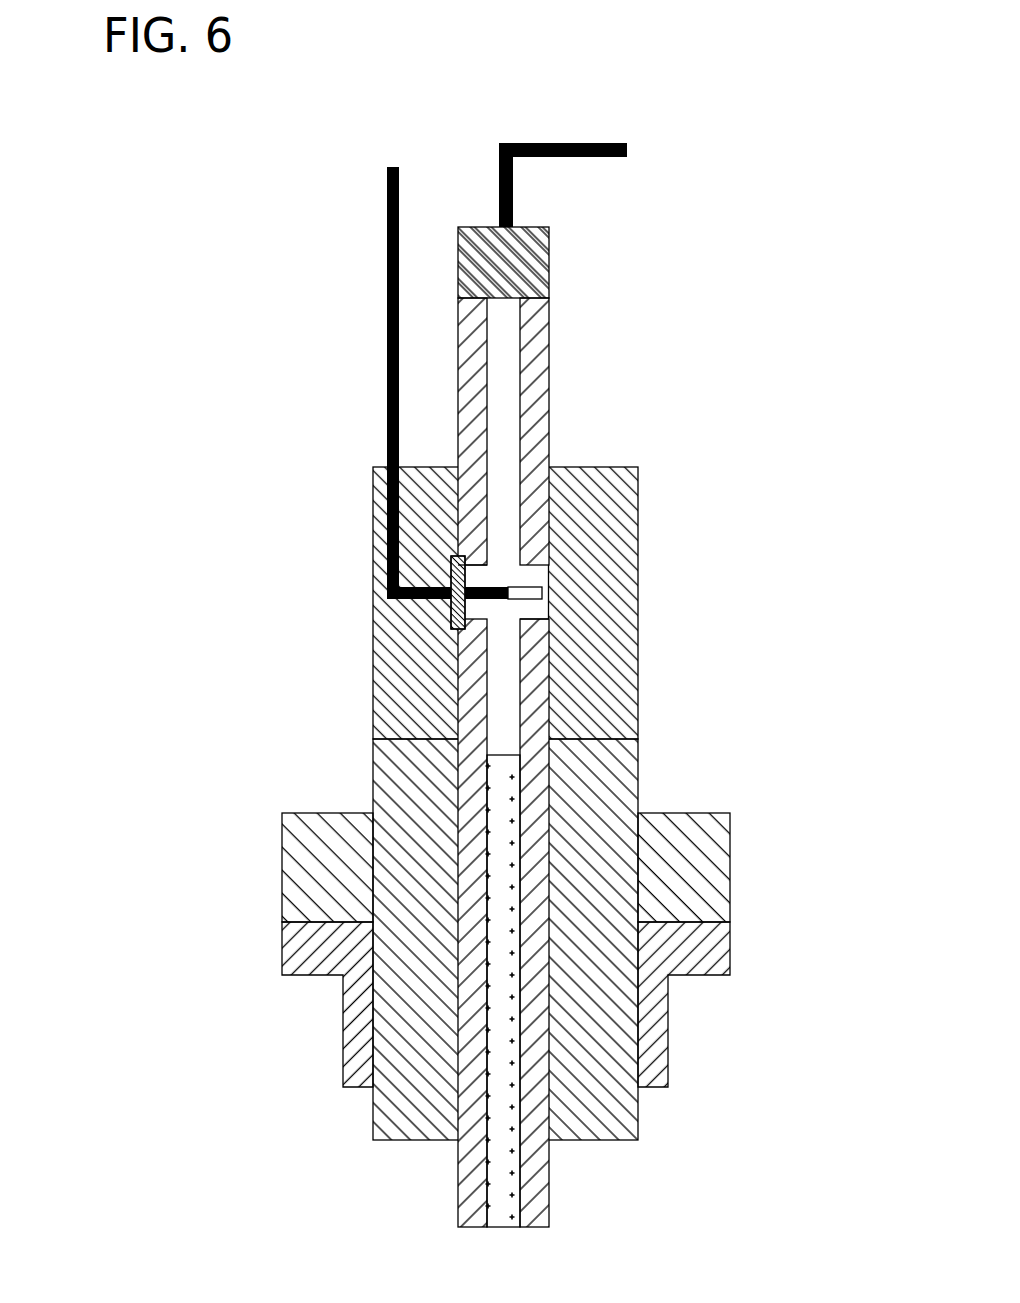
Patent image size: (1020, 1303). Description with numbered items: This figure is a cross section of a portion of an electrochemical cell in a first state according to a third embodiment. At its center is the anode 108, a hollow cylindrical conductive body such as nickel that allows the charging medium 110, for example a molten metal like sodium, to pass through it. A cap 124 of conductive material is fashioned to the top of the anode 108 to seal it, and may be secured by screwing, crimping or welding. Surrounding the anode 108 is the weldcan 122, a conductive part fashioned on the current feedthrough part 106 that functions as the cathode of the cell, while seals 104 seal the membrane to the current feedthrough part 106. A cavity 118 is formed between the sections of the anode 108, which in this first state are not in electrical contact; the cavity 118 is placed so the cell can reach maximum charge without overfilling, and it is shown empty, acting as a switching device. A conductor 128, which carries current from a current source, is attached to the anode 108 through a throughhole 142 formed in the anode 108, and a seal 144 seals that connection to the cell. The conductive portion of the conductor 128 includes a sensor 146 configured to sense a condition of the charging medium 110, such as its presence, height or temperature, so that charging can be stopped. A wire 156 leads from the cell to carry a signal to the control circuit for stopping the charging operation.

The seals 104 is at (715, 952).
The current feedthrough part 106 is at (695, 865).
The anode 108 is at (532, 352).
The charging medium 110 is at (505, 827).
The cavity 118 is at (495, 617).
The weldcan 122 is at (615, 502).
The cap 124 is at (520, 253).
The conductor 128 is at (387, 183).
The throughhole 142 is at (477, 570).
The seal 144 is at (453, 617).
The sensor 146 is at (532, 593).
The wire 156 is at (588, 143).